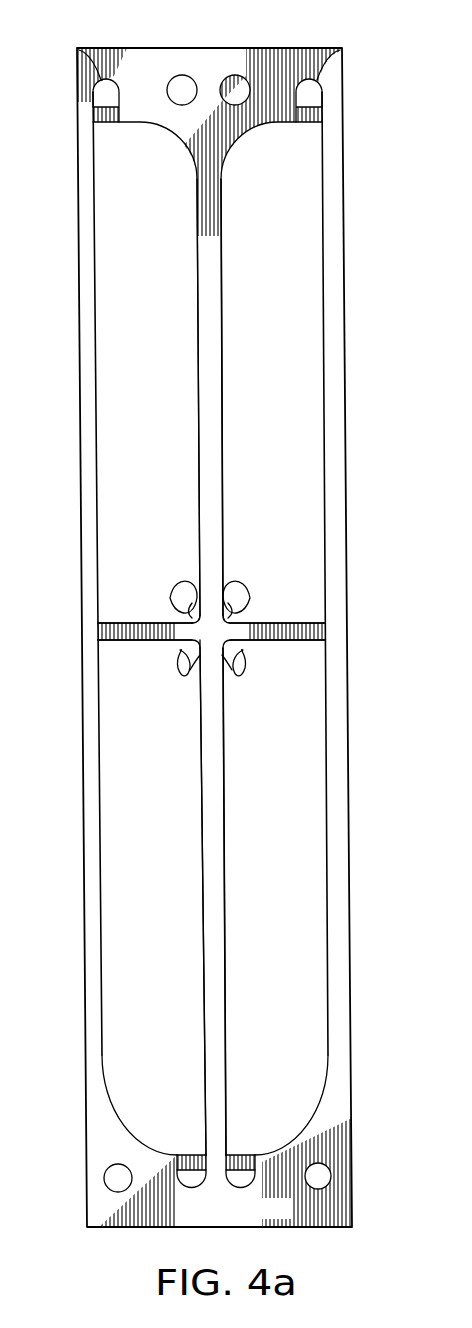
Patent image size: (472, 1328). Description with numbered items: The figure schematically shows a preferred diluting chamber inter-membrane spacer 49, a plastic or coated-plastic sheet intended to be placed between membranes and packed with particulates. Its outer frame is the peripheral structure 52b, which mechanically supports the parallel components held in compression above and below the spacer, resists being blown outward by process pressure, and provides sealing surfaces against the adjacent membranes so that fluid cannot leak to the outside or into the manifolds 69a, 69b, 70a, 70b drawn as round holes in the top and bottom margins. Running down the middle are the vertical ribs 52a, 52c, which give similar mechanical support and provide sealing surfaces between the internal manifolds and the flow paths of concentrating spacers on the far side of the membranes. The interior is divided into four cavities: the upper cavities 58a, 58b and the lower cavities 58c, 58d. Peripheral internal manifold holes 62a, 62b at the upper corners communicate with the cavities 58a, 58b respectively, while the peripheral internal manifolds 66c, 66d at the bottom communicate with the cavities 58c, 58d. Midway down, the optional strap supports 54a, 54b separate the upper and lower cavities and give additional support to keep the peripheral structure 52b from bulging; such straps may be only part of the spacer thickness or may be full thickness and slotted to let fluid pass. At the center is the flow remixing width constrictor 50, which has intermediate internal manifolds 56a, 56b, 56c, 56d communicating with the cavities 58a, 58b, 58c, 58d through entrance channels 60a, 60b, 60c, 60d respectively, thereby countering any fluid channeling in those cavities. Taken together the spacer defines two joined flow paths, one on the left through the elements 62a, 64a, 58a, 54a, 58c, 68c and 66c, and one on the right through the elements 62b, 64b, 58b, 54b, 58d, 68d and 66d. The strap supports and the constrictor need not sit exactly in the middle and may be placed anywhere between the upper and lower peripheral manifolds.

The diluting chamber inter-membrane spacer 49 is at (356, 617).
The flow remixing width constrictor 50 is at (212, 673).
The vertical rib 52a is at (220, 442).
The peripheral structure 52b is at (85, 432).
The vertical rib 52c is at (217, 861).
The strap support 54a is at (148, 623).
The strap support 54b is at (308, 623).
The intermediate internal manifold 56a is at (196, 602).
The intermediate internal manifold 56b is at (228, 603).
The intermediate internal manifold 56c is at (190, 670).
The intermediate internal manifold 56d is at (245, 672).
The cavity 58a is at (149, 372).
The cavity 58b is at (273, 372).
The cavity 58c is at (152, 897).
The cavity 58d is at (275, 897).
The entrance channel 60a is at (166, 594).
The entrance channel 60b is at (257, 594).
The entrance channel 60c is at (178, 650).
The entrance channel 60d is at (255, 650).
The peripheral internal manifold hole 62a is at (78, 49).
The peripheral internal manifold hole 62b is at (342, 49).
The flow path element 64a is at (99, 126).
The flow path element 64b is at (316, 126).
The peripheral internal manifold 66c is at (203, 1186).
The peripheral internal manifold 66d is at (242, 1190).
The flow path element 68c is at (192, 1153).
The flow path element 68d is at (257, 1152).
The manifold 69a is at (182, 75).
The manifold 69b is at (224, 78).
The manifold 70a is at (108, 1191).
The manifold 70b is at (327, 1190).